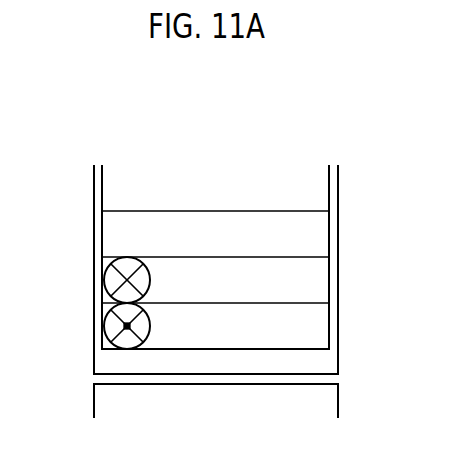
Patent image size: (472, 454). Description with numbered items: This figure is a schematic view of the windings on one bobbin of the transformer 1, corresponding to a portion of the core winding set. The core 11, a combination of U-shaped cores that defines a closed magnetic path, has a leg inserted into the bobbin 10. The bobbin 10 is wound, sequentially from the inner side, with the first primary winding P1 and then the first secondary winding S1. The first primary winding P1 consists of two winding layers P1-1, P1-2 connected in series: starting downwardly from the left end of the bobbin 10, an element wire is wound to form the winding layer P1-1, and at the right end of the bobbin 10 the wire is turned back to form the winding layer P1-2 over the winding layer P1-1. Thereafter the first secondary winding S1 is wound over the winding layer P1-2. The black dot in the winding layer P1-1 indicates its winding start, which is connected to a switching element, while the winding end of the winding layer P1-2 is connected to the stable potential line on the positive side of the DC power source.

The transformer 1 is at (227, 145).
The bobbin 10 is at (338, 211).
The core 11 is at (94, 401).
The first secondary winding S1 is at (215, 234).
The first primary winding P1 is at (82, 260).
The winding layer P1-1 is at (171, 326).
The winding layer P1-2 is at (215, 280).